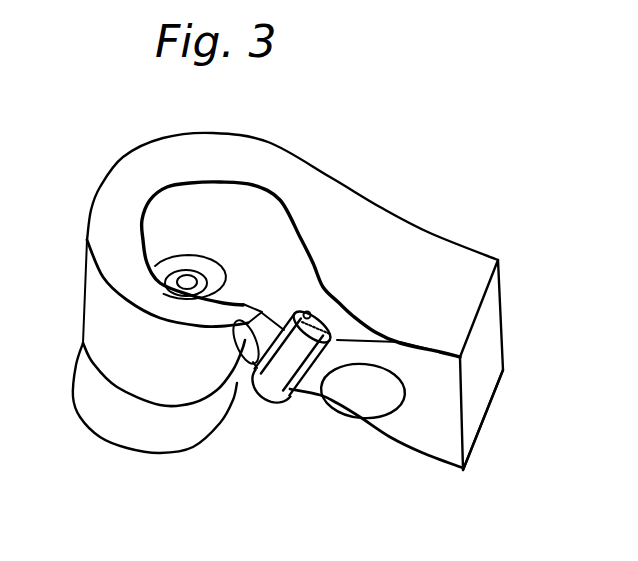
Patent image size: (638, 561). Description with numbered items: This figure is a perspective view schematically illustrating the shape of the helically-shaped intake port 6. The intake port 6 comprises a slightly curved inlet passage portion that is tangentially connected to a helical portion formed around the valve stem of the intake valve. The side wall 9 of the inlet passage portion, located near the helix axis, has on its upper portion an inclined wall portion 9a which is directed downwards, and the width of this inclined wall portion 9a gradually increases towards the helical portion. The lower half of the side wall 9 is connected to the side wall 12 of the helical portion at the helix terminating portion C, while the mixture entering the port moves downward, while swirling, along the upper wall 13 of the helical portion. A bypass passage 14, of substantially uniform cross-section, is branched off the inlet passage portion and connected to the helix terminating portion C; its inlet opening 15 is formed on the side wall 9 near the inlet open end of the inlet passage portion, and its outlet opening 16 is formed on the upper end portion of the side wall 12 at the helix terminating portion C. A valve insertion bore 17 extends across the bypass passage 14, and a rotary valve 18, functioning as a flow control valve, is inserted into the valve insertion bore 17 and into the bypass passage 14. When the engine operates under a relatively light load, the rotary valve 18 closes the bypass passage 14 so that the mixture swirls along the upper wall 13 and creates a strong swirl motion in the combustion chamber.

The helically-shaped intake port 6 is at (449, 229).
The side wall 9 is at (423, 446).
The inclined wall portion 9a is at (350, 318).
The side wall of the helical portion 12 is at (97, 335).
The upper wall of the helical portion 13 is at (118, 280).
The bypass passage 14 is at (319, 393).
The inlet opening 15 is at (360, 406).
The outlet opening 16 is at (236, 339).
The valve insertion bore 17 is at (311, 312).
The rotary valve 18 is at (279, 384).
The helix terminating portion C is at (235, 307).